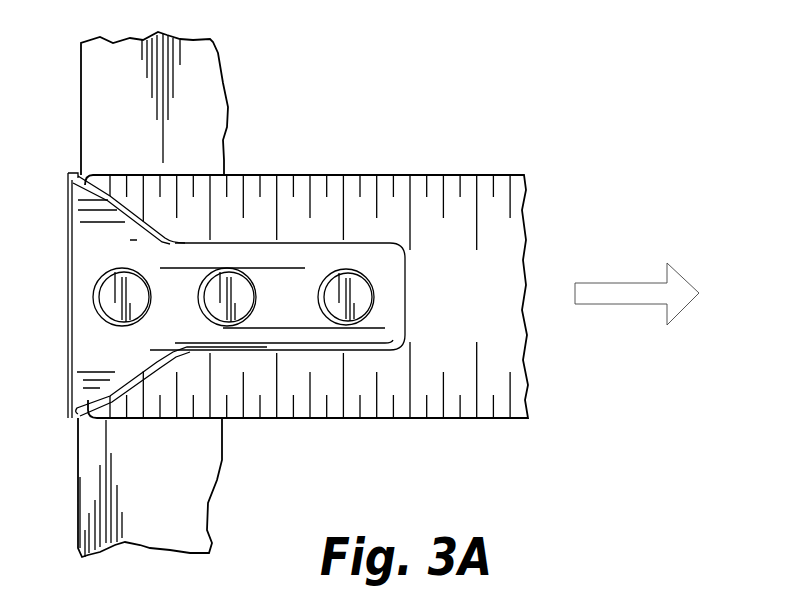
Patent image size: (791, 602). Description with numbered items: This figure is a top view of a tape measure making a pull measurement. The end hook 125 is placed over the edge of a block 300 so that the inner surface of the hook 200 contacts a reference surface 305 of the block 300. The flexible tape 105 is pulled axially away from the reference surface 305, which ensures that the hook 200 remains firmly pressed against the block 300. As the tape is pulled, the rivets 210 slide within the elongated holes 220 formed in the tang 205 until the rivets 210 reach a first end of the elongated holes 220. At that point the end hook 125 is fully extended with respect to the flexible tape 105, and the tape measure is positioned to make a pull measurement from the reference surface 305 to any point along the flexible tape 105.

The flexible tape 105 is at (452, 173).
The end hook 125 is at (80, 238).
The hook inner surface 200 is at (75, 423).
The tang 205 is at (270, 335).
The rivets 210 is at (363, 294).
The elongated holes 220 is at (322, 278).
The block 300 is at (189, 477).
The reference surface 305 is at (79, 95).